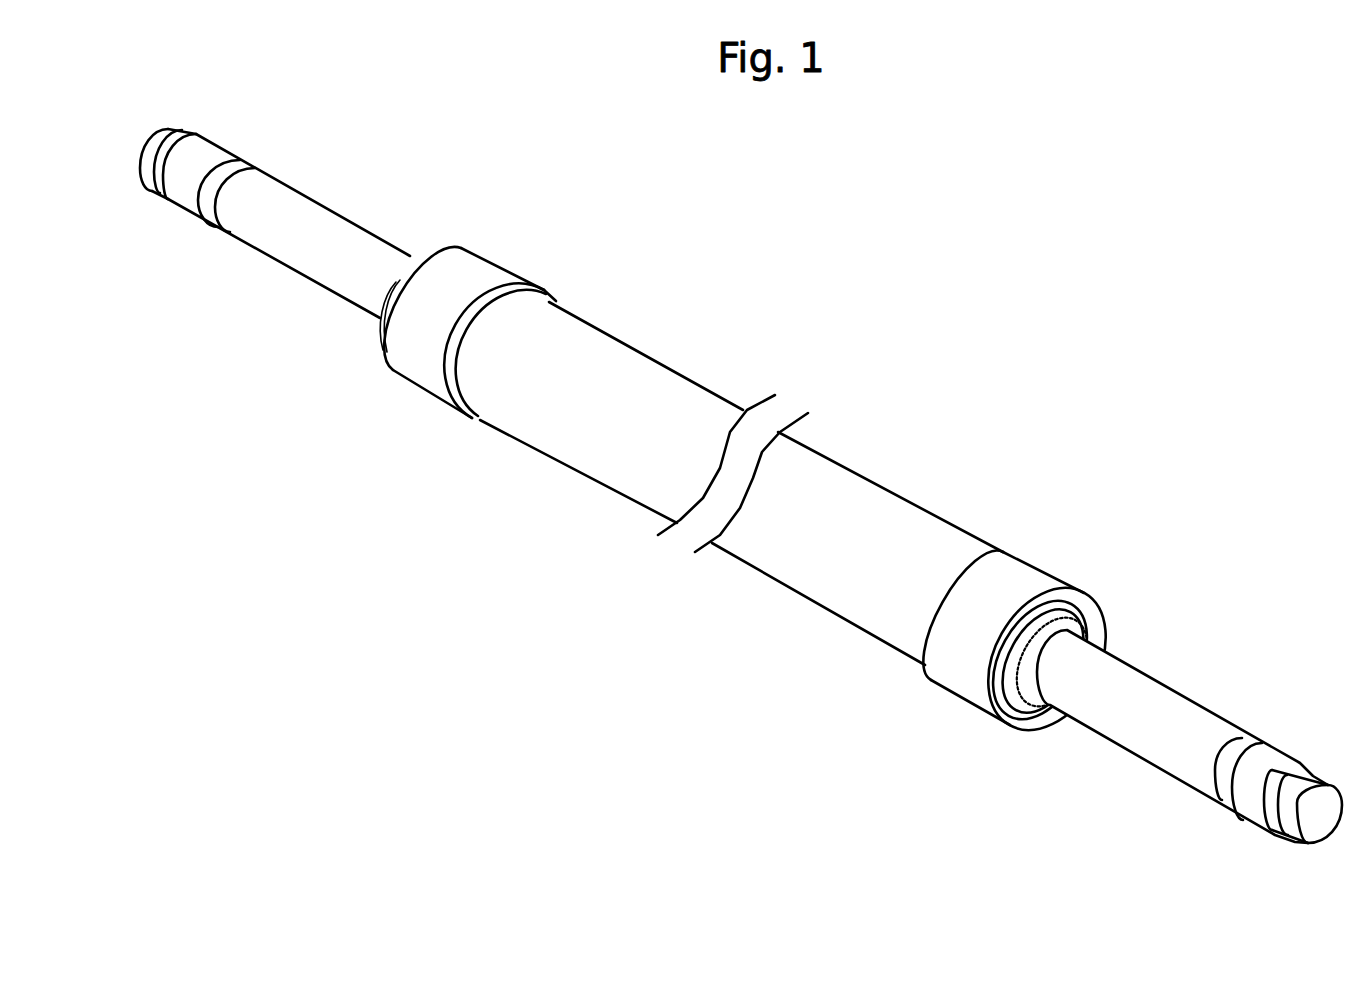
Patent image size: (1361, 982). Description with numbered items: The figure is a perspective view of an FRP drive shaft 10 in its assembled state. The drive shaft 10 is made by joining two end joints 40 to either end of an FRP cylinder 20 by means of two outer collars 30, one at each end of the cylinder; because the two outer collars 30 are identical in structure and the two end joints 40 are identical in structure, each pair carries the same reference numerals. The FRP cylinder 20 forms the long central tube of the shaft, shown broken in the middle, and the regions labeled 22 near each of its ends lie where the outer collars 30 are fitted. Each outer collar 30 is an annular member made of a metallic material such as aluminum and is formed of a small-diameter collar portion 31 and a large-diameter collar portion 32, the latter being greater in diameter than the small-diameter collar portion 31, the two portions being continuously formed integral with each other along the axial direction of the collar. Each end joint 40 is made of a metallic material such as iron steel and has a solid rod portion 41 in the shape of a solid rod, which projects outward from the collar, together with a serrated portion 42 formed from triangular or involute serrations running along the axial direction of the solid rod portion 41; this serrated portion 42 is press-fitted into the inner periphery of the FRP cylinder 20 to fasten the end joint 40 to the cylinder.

The FRP drive shaft 10 is at (1170, 554).
The FRP cylinder 20 is at (871, 461).
The pipe end portion 22 is at (623, 470).
The outer collar 30 is at (513, 255).
The small-diameter collar portion 31 is at (372, 340).
The large-diameter collar portion 32 is at (432, 368).
The end joint 40 is at (315, 185).
The solid rod portion 41 is at (273, 243).
The serrated portion 42 is at (1082, 627).